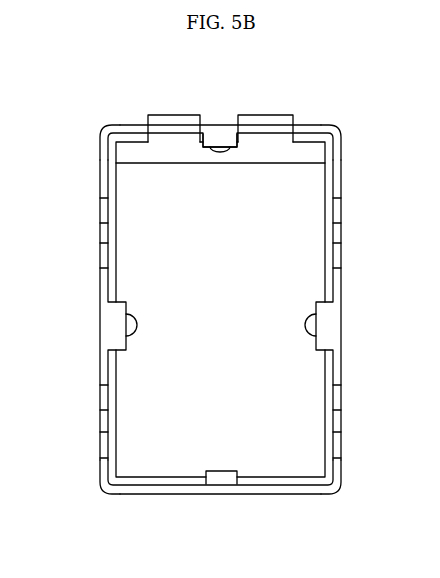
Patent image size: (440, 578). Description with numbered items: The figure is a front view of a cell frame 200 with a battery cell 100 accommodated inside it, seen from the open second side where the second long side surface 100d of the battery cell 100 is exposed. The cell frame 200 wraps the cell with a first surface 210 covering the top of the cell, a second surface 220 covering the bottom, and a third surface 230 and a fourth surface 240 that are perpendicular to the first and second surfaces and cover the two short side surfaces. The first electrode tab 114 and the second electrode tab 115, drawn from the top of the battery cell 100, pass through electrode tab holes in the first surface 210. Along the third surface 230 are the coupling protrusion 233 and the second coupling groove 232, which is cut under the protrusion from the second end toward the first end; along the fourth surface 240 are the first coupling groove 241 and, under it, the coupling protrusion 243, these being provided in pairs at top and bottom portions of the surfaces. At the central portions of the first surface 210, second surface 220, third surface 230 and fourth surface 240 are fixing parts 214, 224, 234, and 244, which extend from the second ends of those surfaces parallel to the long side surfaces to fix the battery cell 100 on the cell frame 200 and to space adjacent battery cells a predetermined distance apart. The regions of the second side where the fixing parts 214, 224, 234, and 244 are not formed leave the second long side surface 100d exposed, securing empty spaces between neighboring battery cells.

The battery cell 100 is at (333, 176).
The second long side surface 100d is at (307, 420).
The first electrode tab 114 is at (268, 116).
The second electrode tab 115 is at (177, 115).
The cell frame 200 is at (319, 111).
The first surface 210 is at (122, 118).
The fixing part 214 is at (222, 146).
The second surface 220 is at (152, 494).
The fixing part 224 is at (222, 471).
The third surface 230 is at (346, 367).
The second coupling groove 232 is at (341, 253).
The coupling protrusion 233 is at (341, 205).
The fixing part 234 is at (310, 336).
The fourth surface 240 is at (97, 368).
The first coupling groove 241 is at (104, 210).
The coupling protrusion 243 is at (104, 255).
The fixing part 244 is at (128, 336).